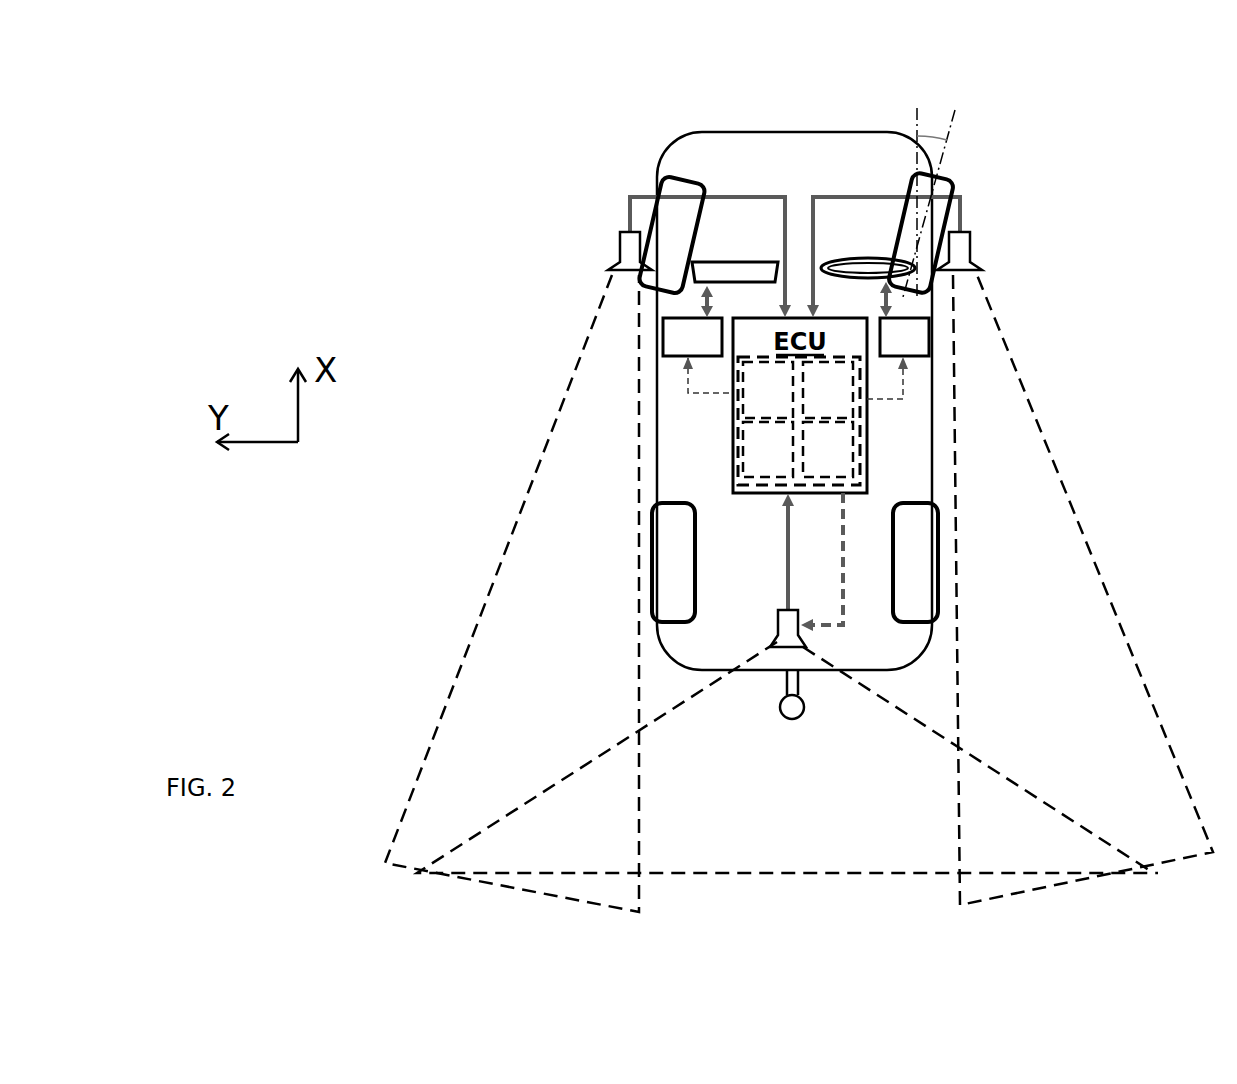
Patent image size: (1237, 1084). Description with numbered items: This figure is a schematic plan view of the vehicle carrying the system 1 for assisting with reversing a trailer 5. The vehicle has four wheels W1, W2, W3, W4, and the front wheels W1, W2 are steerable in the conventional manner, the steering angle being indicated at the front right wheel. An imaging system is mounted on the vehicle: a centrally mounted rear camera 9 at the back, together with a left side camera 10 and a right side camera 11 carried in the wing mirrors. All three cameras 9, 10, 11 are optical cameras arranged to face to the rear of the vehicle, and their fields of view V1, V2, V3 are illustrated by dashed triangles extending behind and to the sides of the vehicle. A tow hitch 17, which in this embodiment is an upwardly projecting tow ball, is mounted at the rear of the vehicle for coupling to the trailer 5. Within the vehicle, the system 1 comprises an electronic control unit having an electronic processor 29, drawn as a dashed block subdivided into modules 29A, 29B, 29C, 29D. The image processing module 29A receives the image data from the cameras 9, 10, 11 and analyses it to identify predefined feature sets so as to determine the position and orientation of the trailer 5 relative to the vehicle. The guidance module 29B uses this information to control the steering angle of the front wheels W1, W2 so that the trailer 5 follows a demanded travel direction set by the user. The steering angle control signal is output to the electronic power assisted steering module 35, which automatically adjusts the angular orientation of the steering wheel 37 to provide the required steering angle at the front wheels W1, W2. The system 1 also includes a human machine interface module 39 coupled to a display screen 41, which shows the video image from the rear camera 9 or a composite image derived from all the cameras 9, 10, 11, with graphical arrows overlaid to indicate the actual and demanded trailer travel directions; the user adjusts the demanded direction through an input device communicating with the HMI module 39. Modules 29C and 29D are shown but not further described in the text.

The system 1 is at (915, 392).
The trailer 5 is at (492, 441).
The rear camera 9 is at (805, 648).
The left side camera 10 is at (630, 247).
The right side camera 11 is at (962, 253).
The tow hitch 17 is at (795, 708).
The electronic processor 29 is at (843, 407).
The image processing module 29A is at (748, 401).
The guidance module 29B is at (808, 401).
The processing module C 29C is at (749, 459).
The processing module D 29D is at (808, 459).
The electronic power assisted steering (EPAS) module 35 is at (893, 347).
The steering wheel 37 is at (863, 255).
The human machine interface (HMI) module 39 is at (680, 348).
The display screen 41 is at (740, 263).
The front wheel W1 is at (678, 183).
The front wheel W2 is at (938, 187).
The wheel W3 is at (680, 575).
The wheel W4 is at (928, 571).
The field of view V1 is at (787, 757).
The field of view V2 is at (512, 593).
The field of view V3 is at (1083, 590).